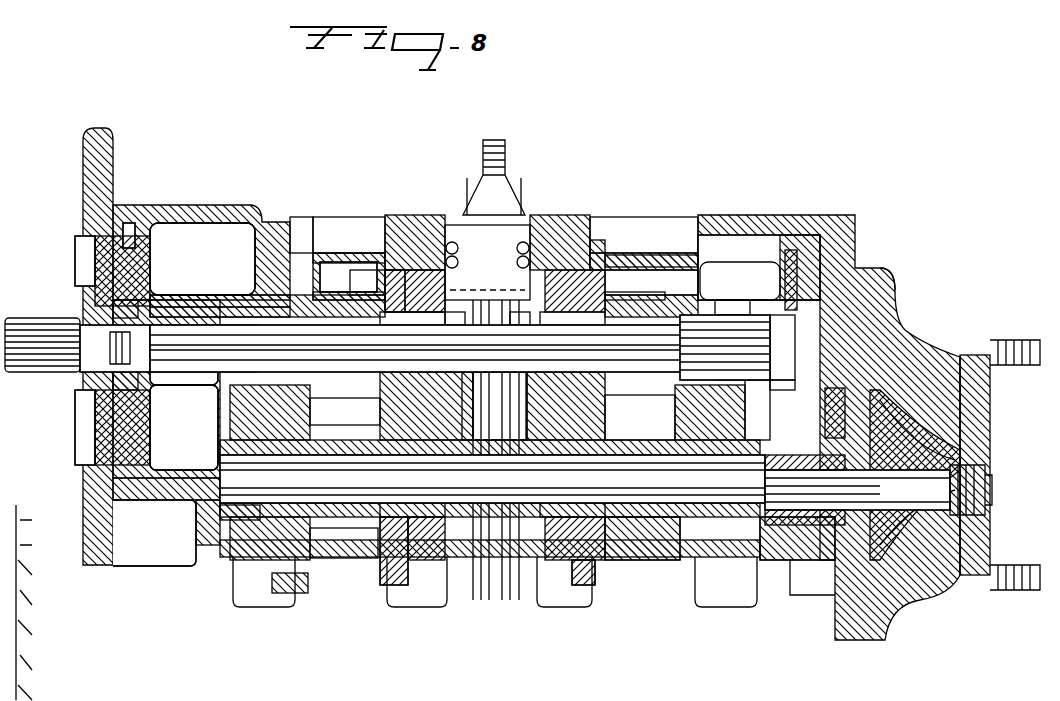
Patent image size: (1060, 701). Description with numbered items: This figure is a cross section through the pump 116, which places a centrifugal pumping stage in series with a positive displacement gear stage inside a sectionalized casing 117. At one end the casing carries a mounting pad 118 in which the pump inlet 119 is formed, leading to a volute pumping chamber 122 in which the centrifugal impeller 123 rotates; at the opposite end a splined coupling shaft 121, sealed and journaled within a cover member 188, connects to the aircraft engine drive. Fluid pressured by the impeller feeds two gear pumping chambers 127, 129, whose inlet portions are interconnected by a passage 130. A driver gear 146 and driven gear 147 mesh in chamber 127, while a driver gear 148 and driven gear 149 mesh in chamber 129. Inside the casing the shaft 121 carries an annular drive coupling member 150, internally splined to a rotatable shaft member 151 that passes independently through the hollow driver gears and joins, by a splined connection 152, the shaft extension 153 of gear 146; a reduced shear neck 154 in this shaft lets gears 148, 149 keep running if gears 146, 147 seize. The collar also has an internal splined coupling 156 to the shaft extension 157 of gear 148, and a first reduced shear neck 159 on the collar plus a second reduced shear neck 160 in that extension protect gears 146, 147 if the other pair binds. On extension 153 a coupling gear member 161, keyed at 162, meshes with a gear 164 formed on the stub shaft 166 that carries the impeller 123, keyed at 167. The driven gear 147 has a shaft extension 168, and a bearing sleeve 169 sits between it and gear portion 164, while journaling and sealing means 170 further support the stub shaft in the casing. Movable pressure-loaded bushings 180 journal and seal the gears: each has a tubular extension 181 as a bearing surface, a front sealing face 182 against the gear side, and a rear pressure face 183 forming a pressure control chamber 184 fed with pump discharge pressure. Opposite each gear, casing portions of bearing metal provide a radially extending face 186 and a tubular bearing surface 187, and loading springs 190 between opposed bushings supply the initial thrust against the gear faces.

The pump 116 is at (874, 248).
The sectionalized casing 117 is at (632, 272).
The mounting pad 118 is at (962, 360).
The pump inlet 119 is at (965, 440).
The coupling shaft 121 is at (38, 325).
The volute pumping chamber 122 is at (892, 352).
The centrifugal impeller 123 is at (925, 480).
The gear pumping chamber 127 is at (625, 560).
The gear pumping chamber 129 is at (385, 560).
The passage 130 is at (578, 385).
The driver gear 146 is at (612, 292).
The driven gear 147 is at (660, 522).
The driver gear 148 is at (325, 292).
The driven gear 149 is at (352, 510).
The drive coupling member 150 is at (165, 300).
The rotatable shaft member 151 is at (210, 302).
The splined connection 152 is at (728, 315).
The shaft extension 153 is at (738, 340).
The reduced shear neck 154 is at (690, 340).
The internal splined coupling 156 is at (196, 388).
The shaft extension 157 is at (258, 330).
The first reduced shear neck 159 is at (175, 305).
The second reduced shear neck 160 is at (204, 348).
The coupling gear member 161 is at (790, 252).
The key 162 is at (783, 347).
The gear 164 is at (790, 535).
The stub shaft 166 is at (890, 485).
The key 167 is at (880, 420).
The shaft extension 168 is at (755, 490).
The bearing sleeve 169 is at (765, 445).
The journaling and sealing means 170 is at (840, 388).
The pressure-loaded bushing 180 is at (420, 385).
The tubular extension 181 is at (487, 331).
The front sealing face 182 is at (372, 275).
The rear pressure face 183 is at (402, 285).
The pressure control chamber 184 is at (420, 300).
The radially extending face 186 is at (315, 265).
The tubular bearing surface 187 is at (250, 512).
The cover member 188 is at (80, 415).
The loading spring 190 is at (494, 406).